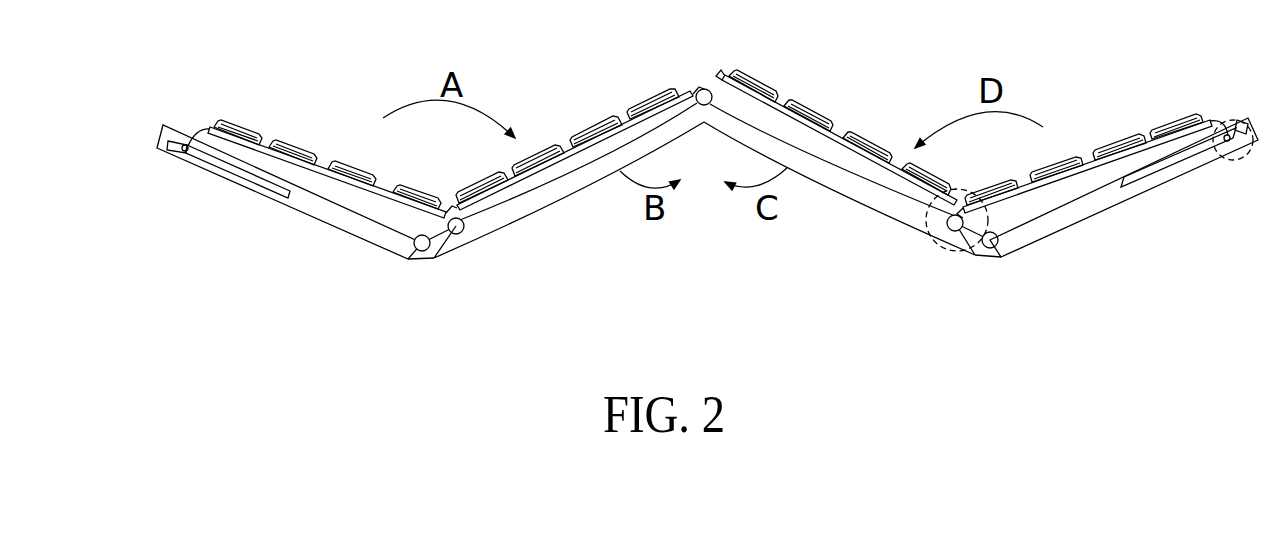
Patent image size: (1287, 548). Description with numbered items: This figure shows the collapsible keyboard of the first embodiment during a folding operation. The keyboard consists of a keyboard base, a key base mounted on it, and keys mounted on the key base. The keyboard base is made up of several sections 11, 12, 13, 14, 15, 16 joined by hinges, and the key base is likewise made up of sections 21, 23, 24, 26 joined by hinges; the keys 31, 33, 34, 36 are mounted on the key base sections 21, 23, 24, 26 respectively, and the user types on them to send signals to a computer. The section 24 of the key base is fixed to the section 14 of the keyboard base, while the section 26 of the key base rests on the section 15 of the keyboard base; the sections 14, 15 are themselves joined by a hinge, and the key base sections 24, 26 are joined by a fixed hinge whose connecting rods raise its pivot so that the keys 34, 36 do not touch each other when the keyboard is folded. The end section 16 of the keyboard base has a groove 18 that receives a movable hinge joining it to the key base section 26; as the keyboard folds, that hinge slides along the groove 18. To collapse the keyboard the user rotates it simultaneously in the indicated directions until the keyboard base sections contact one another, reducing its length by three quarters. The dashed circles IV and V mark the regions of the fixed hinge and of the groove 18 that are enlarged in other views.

The section of the keyboard base 11 is at (362, 228).
The section of the keyboard base 12 is at (442, 247).
The section of the keyboard base 13 is at (523, 197).
The section of the keyboard base 14 is at (822, 157).
The section of the keyboard base 15 is at (980, 254).
The section of the keyboard base 16 is at (1062, 216).
The groove 18 is at (1163, 174).
The section of the key base 21 is at (384, 188).
The section of the key base 23 is at (628, 112).
The section of the key base 24 is at (726, 76).
The section of the key base 26 is at (1092, 158).
The keys 31 is at (295, 152).
The keys 33 is at (582, 130).
The keys 34 is at (825, 120).
The keys 36 is at (1168, 118).
The detail region IV is at (934, 248).
The detail region V is at (1220, 118).